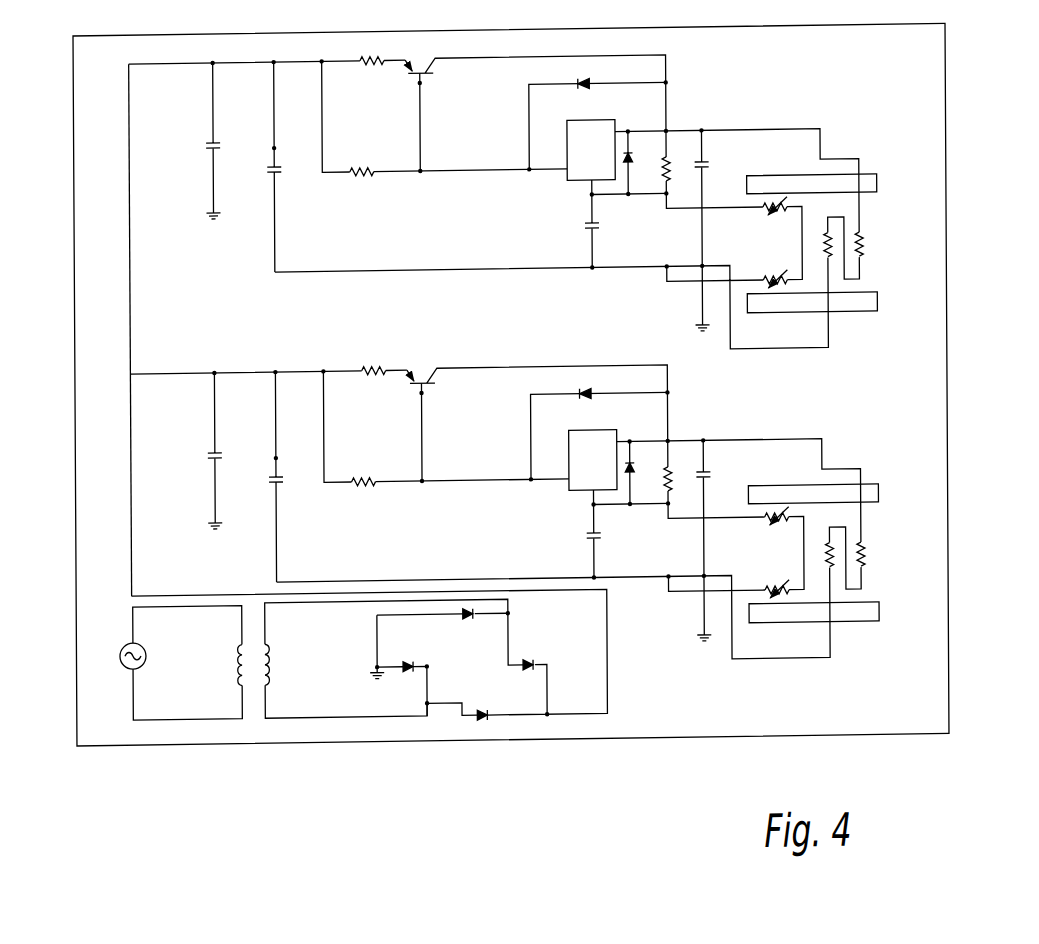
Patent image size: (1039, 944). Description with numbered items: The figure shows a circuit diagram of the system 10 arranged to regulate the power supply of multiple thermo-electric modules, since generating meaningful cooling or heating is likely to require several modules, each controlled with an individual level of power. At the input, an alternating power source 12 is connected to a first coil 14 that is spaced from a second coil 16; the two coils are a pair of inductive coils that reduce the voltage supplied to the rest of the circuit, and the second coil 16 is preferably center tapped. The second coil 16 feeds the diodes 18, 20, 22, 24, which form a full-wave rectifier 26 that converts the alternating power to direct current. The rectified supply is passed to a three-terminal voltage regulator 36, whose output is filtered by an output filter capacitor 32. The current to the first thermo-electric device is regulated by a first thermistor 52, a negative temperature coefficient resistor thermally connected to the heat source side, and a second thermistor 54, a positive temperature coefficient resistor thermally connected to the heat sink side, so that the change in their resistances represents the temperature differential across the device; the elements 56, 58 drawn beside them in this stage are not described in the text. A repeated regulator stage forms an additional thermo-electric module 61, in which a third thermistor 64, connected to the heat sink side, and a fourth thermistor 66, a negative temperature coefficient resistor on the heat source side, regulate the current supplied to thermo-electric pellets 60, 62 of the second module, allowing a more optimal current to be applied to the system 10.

The system 10 is at (369, 730).
The alternating power source 12 is at (138, 664).
The first coil 14 is at (238, 676).
The second coil 16 is at (283, 685).
The diode 18 is at (409, 677).
The diode 20 is at (481, 726).
The diode 22 is at (472, 626).
The diode 24 is at (542, 675).
The full-wave rectifier 26 is at (494, 730).
The output filter capacitor 32 is at (703, 479).
The three-terminal voltage regulator 36 is at (596, 478).
The first thermistor 52 is at (779, 515).
The second thermistor 54 is at (772, 608).
The heater element 56 is at (842, 545).
The temperature sensor 58 is at (869, 571).
The thermo-electric pellet 60 is at (869, 262).
The additional thermo-electric module 61 is at (922, 135).
The thermo-electric pellet 62 is at (842, 236).
The third thermistor 64 is at (764, 291).
The fourth thermistor 66 is at (767, 195).